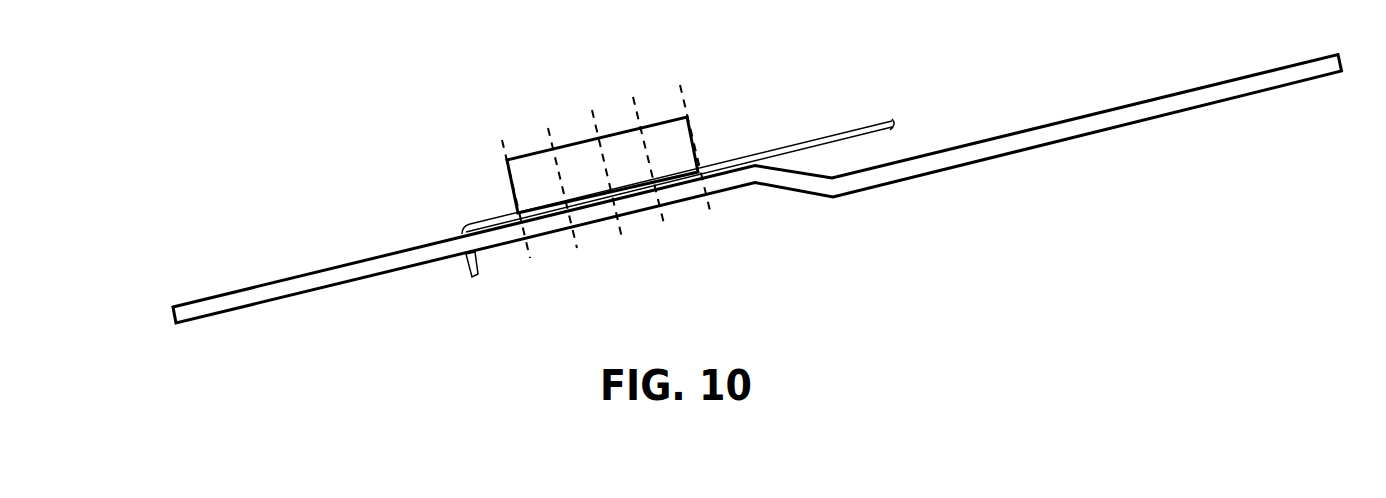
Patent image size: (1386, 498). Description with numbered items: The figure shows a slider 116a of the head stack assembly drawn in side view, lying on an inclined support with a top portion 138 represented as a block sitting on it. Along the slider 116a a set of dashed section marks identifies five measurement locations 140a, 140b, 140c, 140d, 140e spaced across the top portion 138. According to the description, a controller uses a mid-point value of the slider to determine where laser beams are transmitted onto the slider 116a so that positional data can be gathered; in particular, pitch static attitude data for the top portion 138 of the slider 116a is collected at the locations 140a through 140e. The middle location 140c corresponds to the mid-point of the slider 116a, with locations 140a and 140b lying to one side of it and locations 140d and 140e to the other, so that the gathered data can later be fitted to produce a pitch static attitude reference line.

The slider 116a is at (512, 192).
The top portion 138 is at (690, 115).
The location 140a is at (502, 136).
The location 140b is at (546, 122).
The location 140c is at (590, 108).
The location 140d is at (633, 97).
The location 140e is at (681, 86).